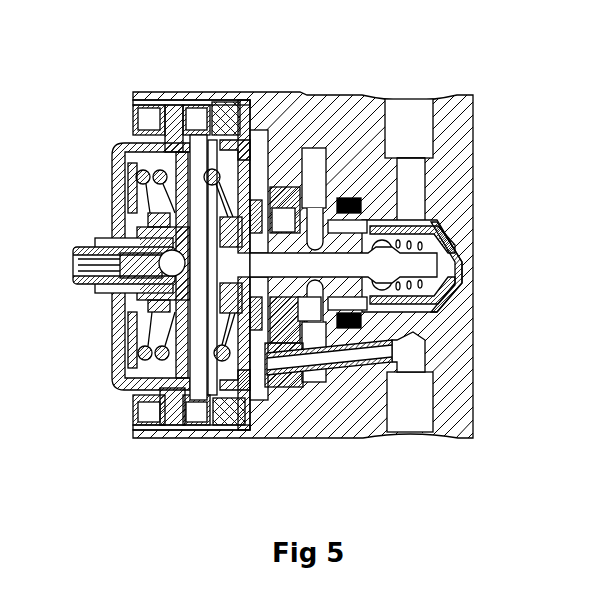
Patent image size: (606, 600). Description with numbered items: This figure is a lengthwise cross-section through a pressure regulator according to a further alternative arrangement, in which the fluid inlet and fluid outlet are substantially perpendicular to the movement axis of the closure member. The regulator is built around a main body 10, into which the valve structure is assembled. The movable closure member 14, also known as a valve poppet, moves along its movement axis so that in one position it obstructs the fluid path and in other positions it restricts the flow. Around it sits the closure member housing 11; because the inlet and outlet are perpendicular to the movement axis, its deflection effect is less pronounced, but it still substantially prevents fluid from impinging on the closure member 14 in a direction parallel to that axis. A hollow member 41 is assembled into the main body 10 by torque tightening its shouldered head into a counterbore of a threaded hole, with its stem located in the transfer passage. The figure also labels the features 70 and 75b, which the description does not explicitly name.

The main body 10 is at (344, 96).
The inlet bore 70 is at (410, 173).
The closure member housing 11 is at (468, 238).
The movable closure member 14 is at (440, 271).
The hollow member 41 is at (339, 378).
The outlet bore 75b is at (412, 358).